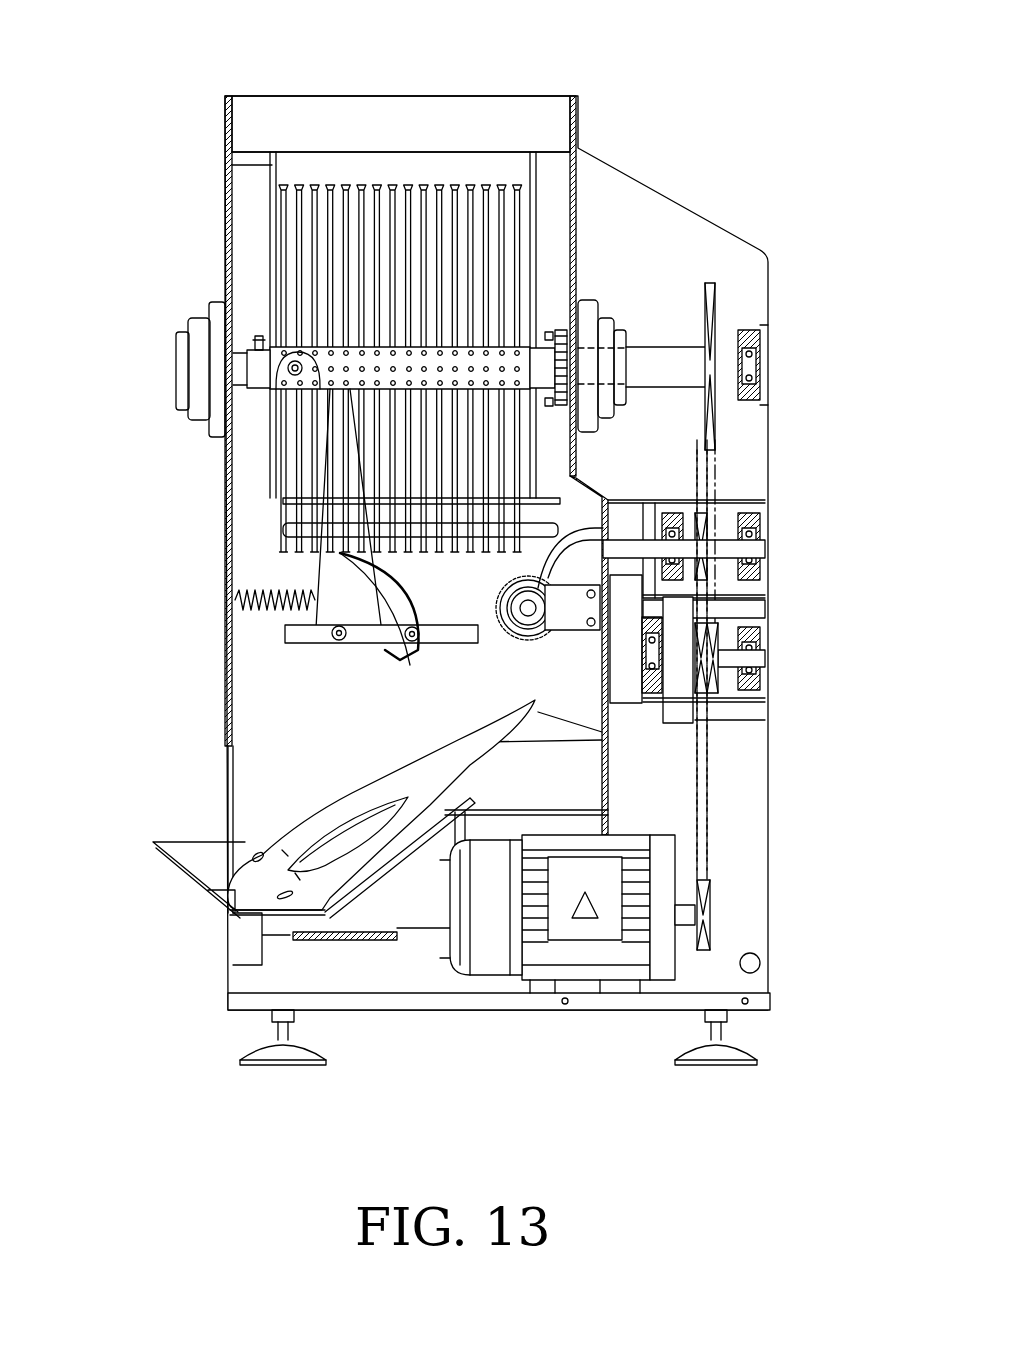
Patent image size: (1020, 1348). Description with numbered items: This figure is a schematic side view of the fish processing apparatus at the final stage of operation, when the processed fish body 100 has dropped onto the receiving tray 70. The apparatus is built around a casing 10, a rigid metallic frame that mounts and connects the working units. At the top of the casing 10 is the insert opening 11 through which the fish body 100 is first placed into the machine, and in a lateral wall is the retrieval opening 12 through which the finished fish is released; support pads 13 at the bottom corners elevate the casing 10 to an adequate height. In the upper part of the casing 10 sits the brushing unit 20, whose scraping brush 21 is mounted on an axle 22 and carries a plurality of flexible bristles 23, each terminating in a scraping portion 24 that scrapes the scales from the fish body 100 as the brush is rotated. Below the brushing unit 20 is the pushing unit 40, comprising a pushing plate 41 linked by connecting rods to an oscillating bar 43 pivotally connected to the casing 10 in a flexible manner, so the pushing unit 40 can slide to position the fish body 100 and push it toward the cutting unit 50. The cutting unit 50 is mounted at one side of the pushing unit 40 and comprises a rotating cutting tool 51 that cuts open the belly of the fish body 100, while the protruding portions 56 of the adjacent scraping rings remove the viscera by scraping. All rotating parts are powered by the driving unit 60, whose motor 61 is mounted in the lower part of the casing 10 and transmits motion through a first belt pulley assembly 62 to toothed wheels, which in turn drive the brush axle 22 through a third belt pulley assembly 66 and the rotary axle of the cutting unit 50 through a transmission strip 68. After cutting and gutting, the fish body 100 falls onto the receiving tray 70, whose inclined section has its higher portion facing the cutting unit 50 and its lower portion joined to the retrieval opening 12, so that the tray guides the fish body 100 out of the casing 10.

The casing 10 is at (228, 192).
The insert opening 11 is at (357, 112).
The retrieval opening 12 is at (200, 860).
The support pads 13 is at (265, 1052).
The brushing unit 20 is at (331, 165).
The scraping brush 21 is at (445, 185).
The axle 22 is at (530, 360).
The flexible bristles 23 is at (518, 225).
The scraping portion 24 is at (500, 205).
The pushing unit 40 is at (342, 668).
The pushing plate 41 is at (398, 600).
The oscillating bar 43 is at (315, 578).
The cutting unit 50 is at (495, 665).
The cutting tool 51 is at (548, 648).
The protruding portions 56 is at (510, 592).
The driving unit 60 is at (728, 760).
The motor 61 is at (568, 930).
The first belt pulley assembly 62 is at (710, 820).
The third belt pulley assembly 66 is at (715, 430).
The transmission strip 68 is at (610, 536).
The receiving tray 70 is at (355, 890).
The fish body 100 is at (330, 800).